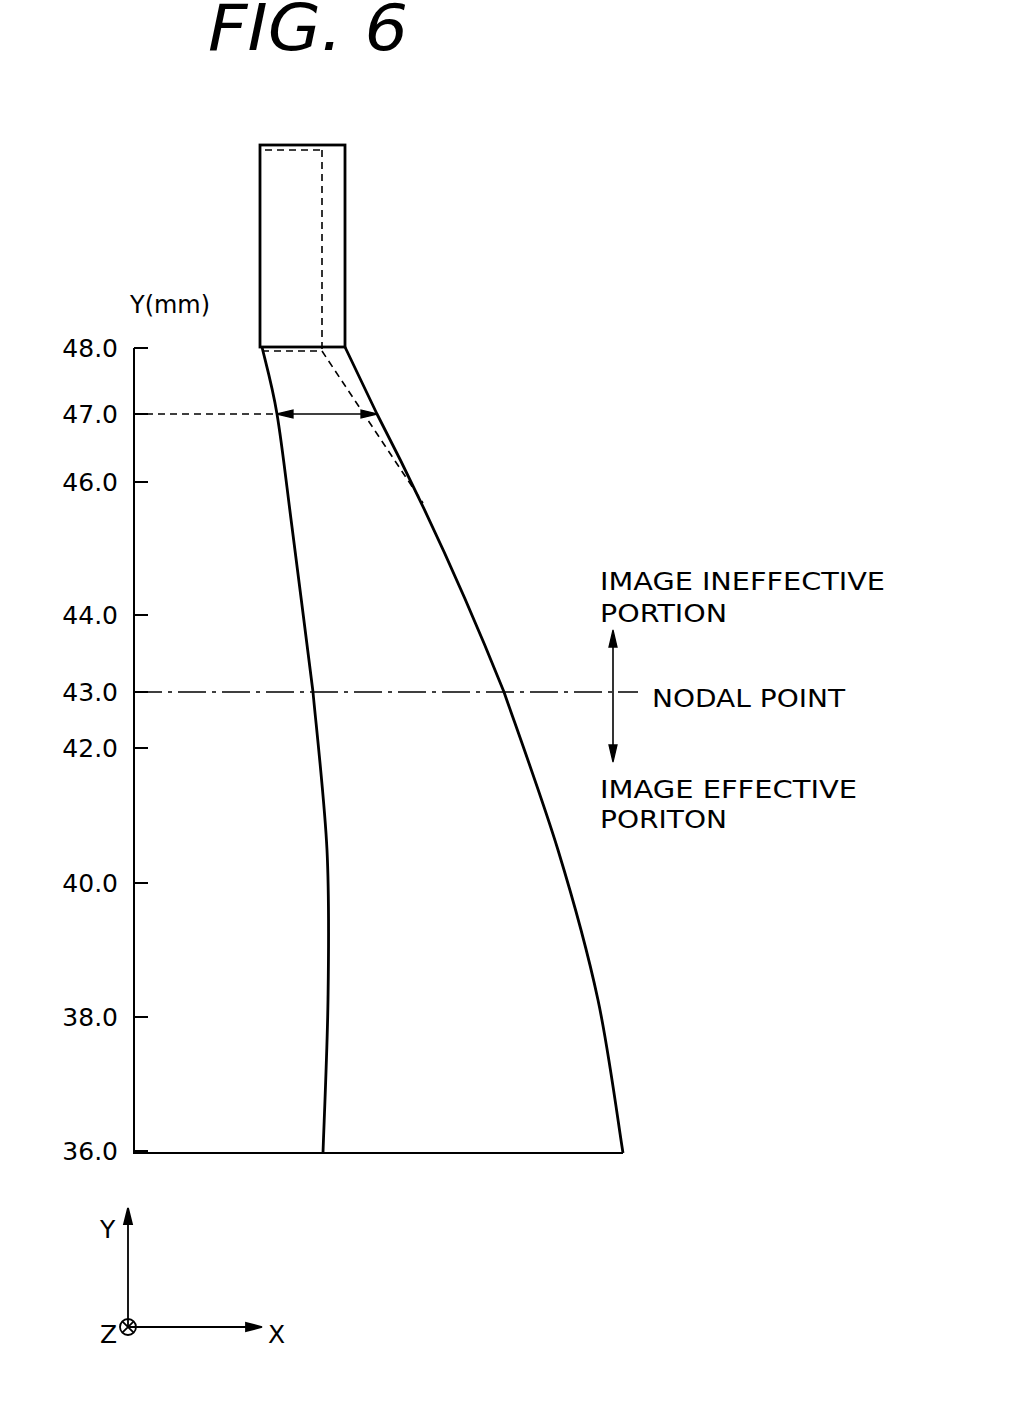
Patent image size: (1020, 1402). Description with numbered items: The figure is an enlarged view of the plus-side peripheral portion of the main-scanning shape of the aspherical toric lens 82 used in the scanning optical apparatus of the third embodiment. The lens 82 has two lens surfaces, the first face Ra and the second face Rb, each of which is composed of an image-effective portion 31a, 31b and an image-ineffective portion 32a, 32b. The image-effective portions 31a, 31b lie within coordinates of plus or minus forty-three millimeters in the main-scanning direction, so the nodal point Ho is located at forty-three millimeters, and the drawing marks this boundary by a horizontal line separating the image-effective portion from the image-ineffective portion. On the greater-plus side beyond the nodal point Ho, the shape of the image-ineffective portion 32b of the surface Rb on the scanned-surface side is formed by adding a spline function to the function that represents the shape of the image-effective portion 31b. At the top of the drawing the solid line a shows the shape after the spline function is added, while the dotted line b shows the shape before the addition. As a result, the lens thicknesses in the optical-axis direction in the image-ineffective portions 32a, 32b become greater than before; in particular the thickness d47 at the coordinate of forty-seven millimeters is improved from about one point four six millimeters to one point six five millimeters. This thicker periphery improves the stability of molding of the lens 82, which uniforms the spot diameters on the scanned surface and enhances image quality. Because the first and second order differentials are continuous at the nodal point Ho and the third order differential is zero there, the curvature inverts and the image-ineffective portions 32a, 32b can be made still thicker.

The solid line a is at (345, 284).
The dotted line b is at (322, 227).
The thickness in the optical-axis direction at coordinate Y=47 mm d47 is at (330, 418).
The aspherical toric lens 82 is at (403, 765).
The image-ineffective portion 32a is at (292, 527).
The image-ineffective portion 32b is at (444, 540).
The image-effective portion 31a is at (325, 893).
The image-effective portion 31b is at (577, 910).
The first face Ra is at (283, 922).
The second face Rb is at (592, 922).
The nodal point Ho is at (540, 657).